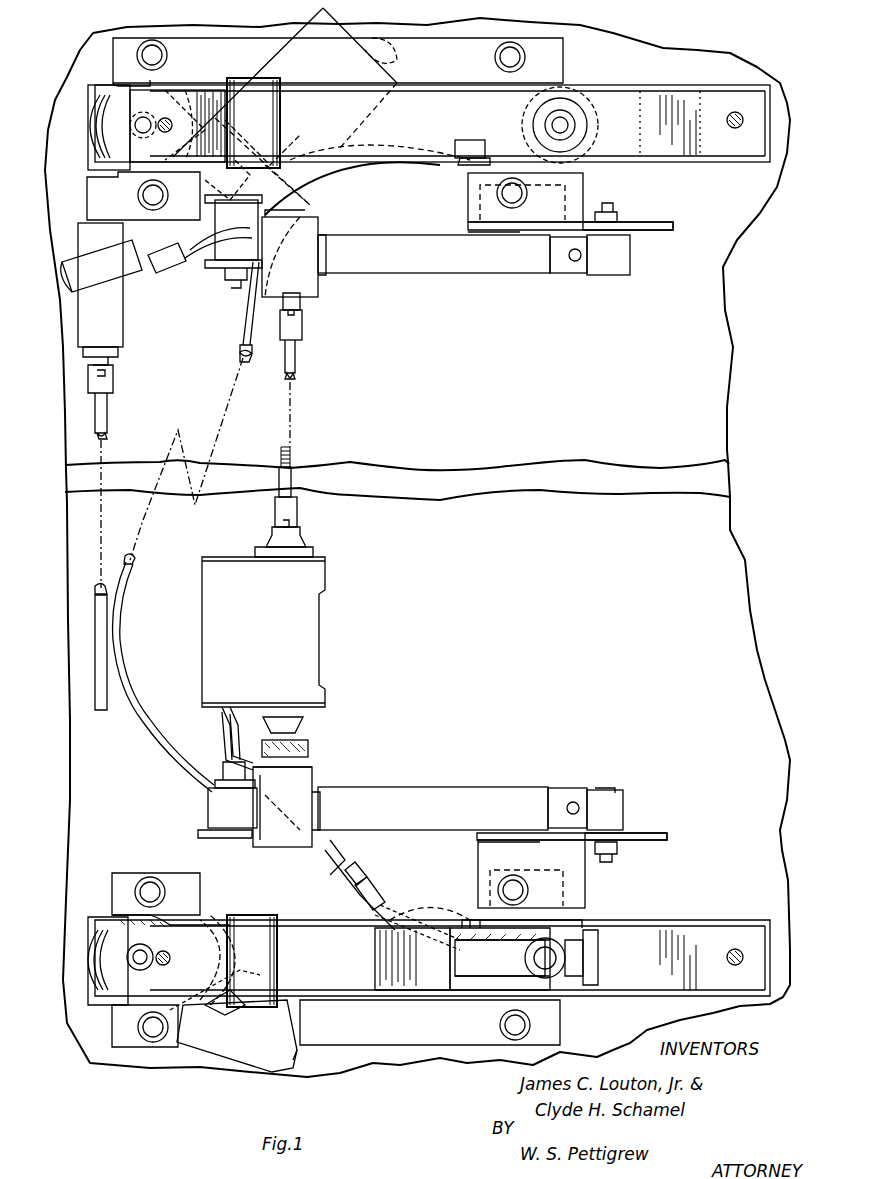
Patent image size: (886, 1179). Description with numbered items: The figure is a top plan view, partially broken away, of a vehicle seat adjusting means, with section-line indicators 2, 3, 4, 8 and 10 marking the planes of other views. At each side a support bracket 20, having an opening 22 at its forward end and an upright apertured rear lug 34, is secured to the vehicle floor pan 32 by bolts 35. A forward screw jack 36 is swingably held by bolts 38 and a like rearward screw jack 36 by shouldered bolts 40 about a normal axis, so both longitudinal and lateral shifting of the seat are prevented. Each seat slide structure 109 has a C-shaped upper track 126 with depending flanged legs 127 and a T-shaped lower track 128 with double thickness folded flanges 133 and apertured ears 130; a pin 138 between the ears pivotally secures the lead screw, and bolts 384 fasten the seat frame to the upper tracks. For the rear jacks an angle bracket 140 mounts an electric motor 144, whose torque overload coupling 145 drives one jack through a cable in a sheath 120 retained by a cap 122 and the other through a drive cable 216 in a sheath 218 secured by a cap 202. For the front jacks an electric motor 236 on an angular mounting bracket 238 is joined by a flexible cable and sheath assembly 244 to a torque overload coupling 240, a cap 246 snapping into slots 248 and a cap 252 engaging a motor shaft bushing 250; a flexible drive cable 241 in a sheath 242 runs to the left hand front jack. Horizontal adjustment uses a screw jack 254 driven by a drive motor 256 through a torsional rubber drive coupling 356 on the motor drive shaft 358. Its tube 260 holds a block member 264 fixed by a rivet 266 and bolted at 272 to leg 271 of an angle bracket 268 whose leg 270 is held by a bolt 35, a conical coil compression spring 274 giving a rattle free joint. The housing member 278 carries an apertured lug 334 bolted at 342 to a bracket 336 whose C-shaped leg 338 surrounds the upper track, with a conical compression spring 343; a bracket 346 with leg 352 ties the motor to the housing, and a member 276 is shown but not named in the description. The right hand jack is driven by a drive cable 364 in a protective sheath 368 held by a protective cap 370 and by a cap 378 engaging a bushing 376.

The section line 2- 2 is at (23, 1013).
The section line 3- 3 is at (203, 722).
The section line 4- 4 is at (52, 697).
The section line 8- 8 is at (161, 836).
The sleeve / section line 10- 10 is at (280, 113).
The support bracket 20 is at (575, 82).
The opening 22 is at (195, 950).
The vehicle floor pan 32 is at (733, 496).
The rear lug 34 is at (585, 950).
The bolts 35 is at (498, 62).
The screw jack 36 is at (90, 125).
The bolts 38 is at (122, 84).
The shouldered bolts 40 is at (592, 960).
The seat slide structure 109 is at (698, 85).
The sheath 120 is at (345, 178).
The cap 122 is at (465, 140).
The upper track 126 is at (595, 92).
The flanged legs 127 is at (400, 1000).
The lower track 128 is at (445, 1000).
The apertured ears 130 is at (472, 918).
The folded flanges 133 is at (455, 995).
The pin 138 is at (120, 935).
The angle bracket 140 is at (230, 998).
The electric motor 144 is at (293, 1062).
The torque overload coupling 145 is at (340, 858).
The cap 202 is at (370, 885).
The drive cable 216 is at (240, 357).
The sheath 218 is at (247, 333).
The electric motor 236 is at (385, 72).
The angular mounting bracket 238 is at (175, 115).
The torque overload coupling 240 is at (90, 324).
The flexible drive cable 241 is at (98, 440).
The sheath 242 is at (96, 420).
The flexible cable and sheath assembly 244 is at (195, 240).
The cap 246 is at (162, 272).
The slots 248 is at (101, 266).
The bushing 250 is at (275, 178).
The cap 252 is at (225, 180).
The screw jack 254 is at (478, 273).
The drive motor 256 is at (318, 615).
The tube 260 is at (558, 273).
The block member 264 is at (622, 262).
The rivet 266 is at (578, 261).
The angle bracket 268 is at (466, 214).
The leg 270 is at (582, 197).
The leg 271 is at (497, 232).
The bolt 272 is at (620, 210).
The conical coil compression spring 274 is at (635, 232).
The bar 276 is at (418, 270).
The housing member 278 is at (305, 282).
The apertured lug 334 is at (228, 275).
The bracket 336 is at (185, 900).
The C-shaped leg 338 is at (255, 1012).
The bolt 342 is at (232, 842).
The conical compression spring 343 is at (282, 803).
The bracket 346 is at (228, 738).
The leg 352 is at (250, 722).
The torsional rubber drive coupling 356 is at (310, 750).
The motor drive shaft 358 is at (302, 305).
The drive cable 364 is at (293, 450).
The sheath 368 is at (296, 365).
The protective cap 370 is at (302, 330).
The bushing 376 is at (300, 538).
The cap 378 is at (275, 517).
The bolts 384 is at (737, 112).